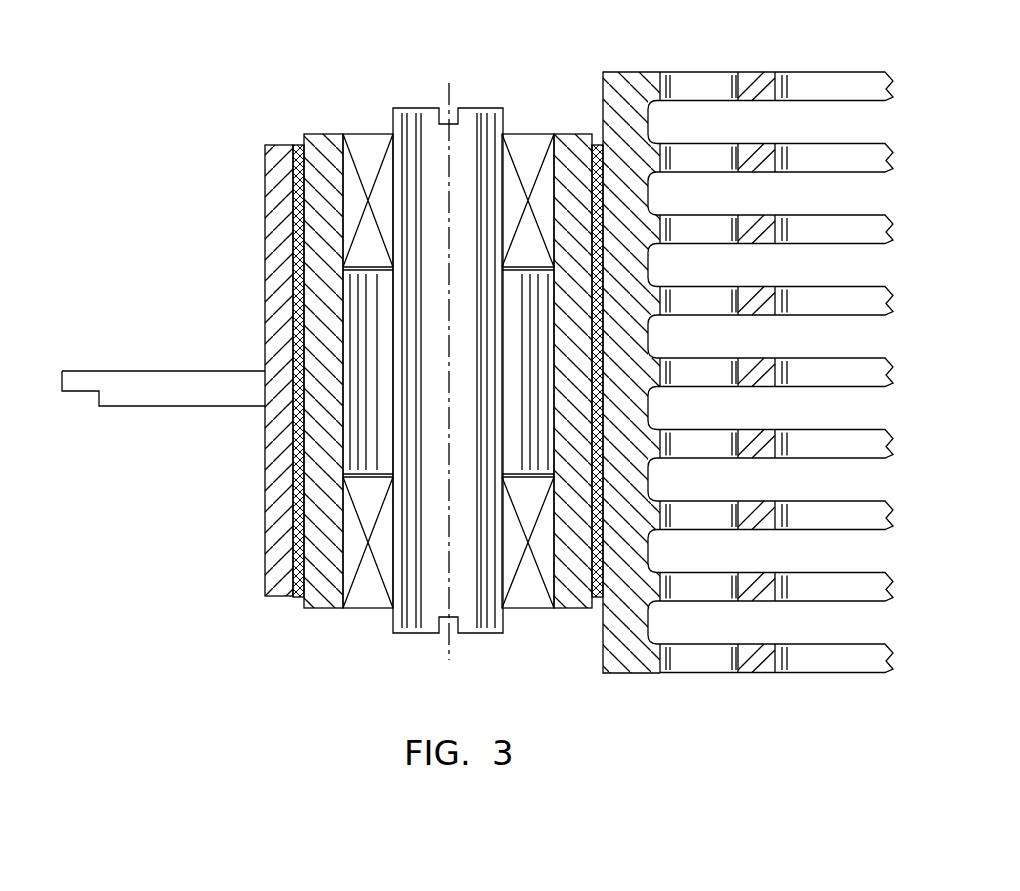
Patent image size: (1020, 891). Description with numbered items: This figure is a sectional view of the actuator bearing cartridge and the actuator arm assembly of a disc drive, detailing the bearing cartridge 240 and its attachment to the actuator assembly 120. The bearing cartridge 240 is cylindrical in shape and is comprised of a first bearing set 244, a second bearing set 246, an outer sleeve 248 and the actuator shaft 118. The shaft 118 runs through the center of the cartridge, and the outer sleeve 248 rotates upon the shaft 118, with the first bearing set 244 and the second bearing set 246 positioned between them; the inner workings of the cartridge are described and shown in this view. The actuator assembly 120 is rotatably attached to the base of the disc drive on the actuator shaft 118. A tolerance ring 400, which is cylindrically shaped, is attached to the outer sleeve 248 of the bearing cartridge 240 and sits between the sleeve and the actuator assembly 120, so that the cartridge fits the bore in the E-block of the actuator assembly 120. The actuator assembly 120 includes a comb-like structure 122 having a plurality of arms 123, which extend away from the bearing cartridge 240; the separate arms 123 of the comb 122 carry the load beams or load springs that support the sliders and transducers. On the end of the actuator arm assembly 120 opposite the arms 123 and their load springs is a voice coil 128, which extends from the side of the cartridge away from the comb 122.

The actuator shaft 118 is at (416, 107).
The actuator assembly 120 is at (278, 144).
The comb-like structure 122 is at (833, 80).
The arms 123 is at (829, 232).
The voice coil 128 is at (83, 370).
The bearing cartridge 240 is at (322, 133).
The first bearing set 244 is at (531, 133).
The second bearing set 246 is at (530, 611).
The outer sleeve 248 is at (330, 611).
The tolerance ring 400 is at (301, 602).